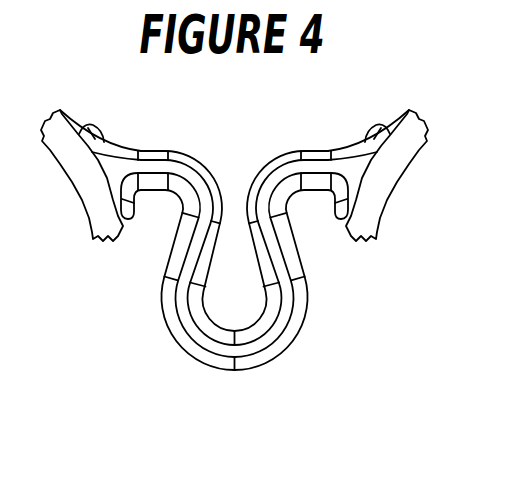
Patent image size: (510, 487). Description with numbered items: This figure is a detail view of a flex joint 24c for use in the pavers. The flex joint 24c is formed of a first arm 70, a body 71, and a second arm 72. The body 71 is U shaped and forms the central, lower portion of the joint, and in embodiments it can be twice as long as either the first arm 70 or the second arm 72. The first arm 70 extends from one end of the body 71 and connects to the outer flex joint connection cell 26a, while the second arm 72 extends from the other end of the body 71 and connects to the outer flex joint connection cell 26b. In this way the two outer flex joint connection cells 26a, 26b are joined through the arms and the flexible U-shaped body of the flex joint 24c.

The flex joint 24c is at (234, 285).
The outer flex joint connection cell 26a is at (82, 101).
The outer flex joint connection cell 26b is at (396, 116).
The first arm 70 is at (158, 149).
The body 71 is at (258, 369).
The second arm 72 is at (311, 149).